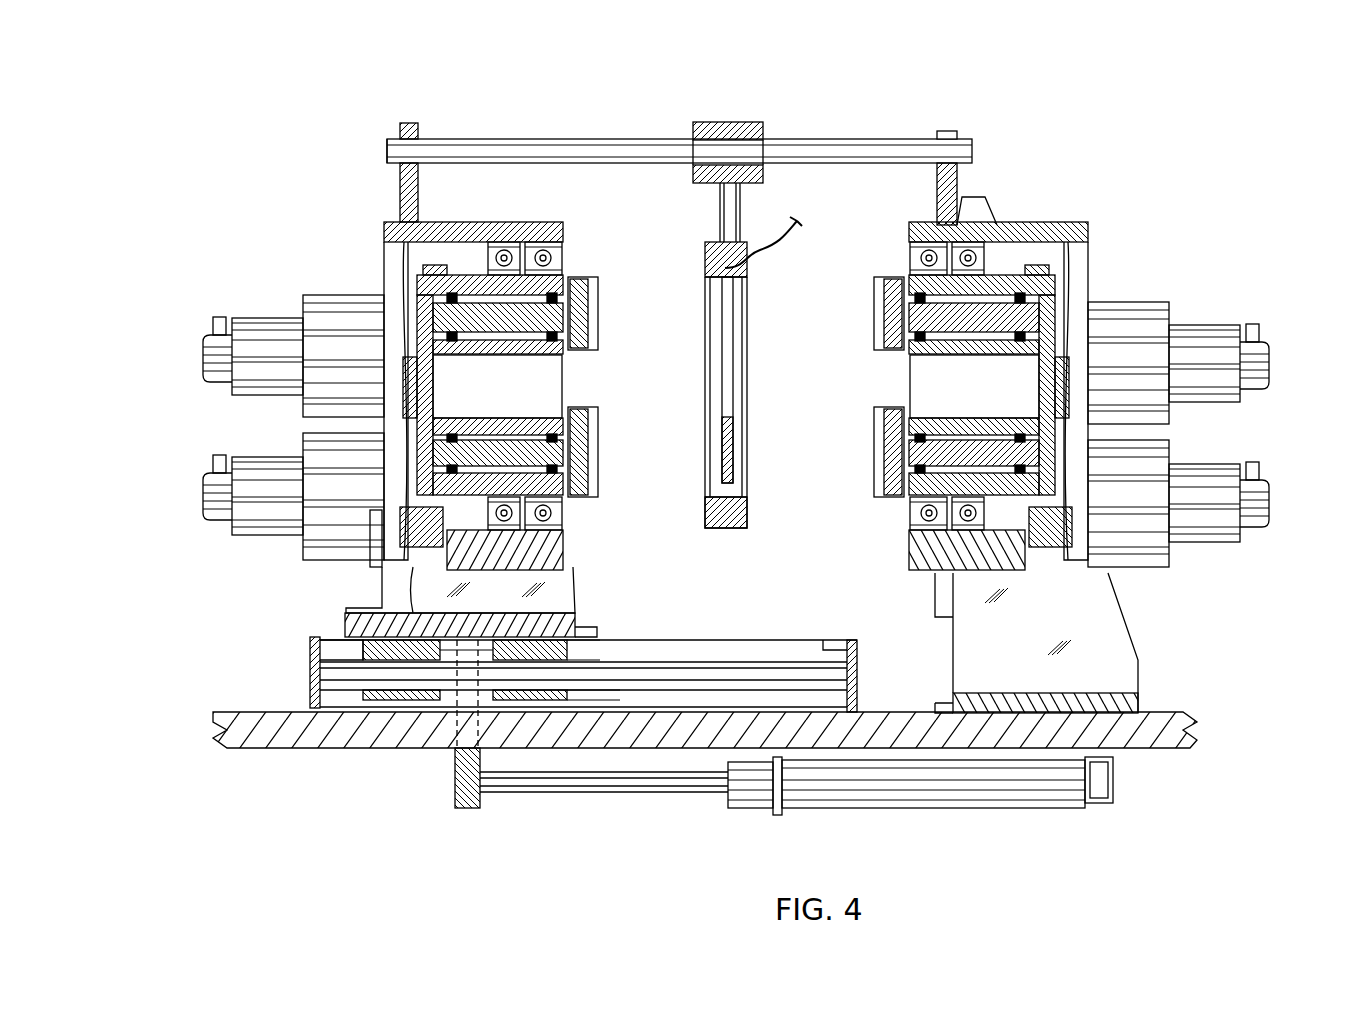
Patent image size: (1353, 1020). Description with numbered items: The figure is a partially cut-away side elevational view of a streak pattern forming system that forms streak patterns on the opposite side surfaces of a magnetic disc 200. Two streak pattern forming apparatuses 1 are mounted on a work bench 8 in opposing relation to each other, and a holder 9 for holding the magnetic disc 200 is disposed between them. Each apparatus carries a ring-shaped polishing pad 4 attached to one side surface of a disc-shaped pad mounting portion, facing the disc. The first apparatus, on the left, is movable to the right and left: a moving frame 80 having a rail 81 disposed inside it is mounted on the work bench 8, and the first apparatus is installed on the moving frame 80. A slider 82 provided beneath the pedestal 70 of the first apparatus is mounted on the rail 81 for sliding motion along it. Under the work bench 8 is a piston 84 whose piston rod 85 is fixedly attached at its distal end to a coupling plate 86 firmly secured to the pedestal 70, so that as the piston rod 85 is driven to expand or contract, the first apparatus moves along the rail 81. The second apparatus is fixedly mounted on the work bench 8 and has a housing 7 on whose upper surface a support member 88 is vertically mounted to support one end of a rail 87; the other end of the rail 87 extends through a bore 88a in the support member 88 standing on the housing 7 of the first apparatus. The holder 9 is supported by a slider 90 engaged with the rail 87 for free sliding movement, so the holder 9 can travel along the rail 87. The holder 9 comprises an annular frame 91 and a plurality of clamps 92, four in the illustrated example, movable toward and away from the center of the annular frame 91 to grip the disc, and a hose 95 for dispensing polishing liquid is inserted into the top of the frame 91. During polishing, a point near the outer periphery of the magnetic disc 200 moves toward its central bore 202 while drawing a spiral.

The streak pattern forming apparatus 1 is at (288, 262).
The polishing pad 4 is at (598, 408).
The housing 7 is at (386, 222).
The work bench 8 is at (1158, 738).
The holder 9 is at (692, 240).
The pedestal 70 is at (580, 620).
The moving frame 80 is at (312, 658).
The rail 81 is at (735, 667).
The slider 82 is at (630, 684).
The piston 84 is at (1030, 810).
The piston rod 85 is at (566, 793).
The coupling plate 86 is at (464, 810).
The rail 87 is at (835, 150).
The support member 88 is at (412, 125).
The bore 88a is at (387, 148).
The slider 90 is at (715, 122).
The annular frame 91 is at (705, 265).
The clamps 92 is at (748, 300).
The hose 95 is at (793, 243).
The magnetic disc 200 is at (735, 443).
The central bore 202 is at (728, 353).